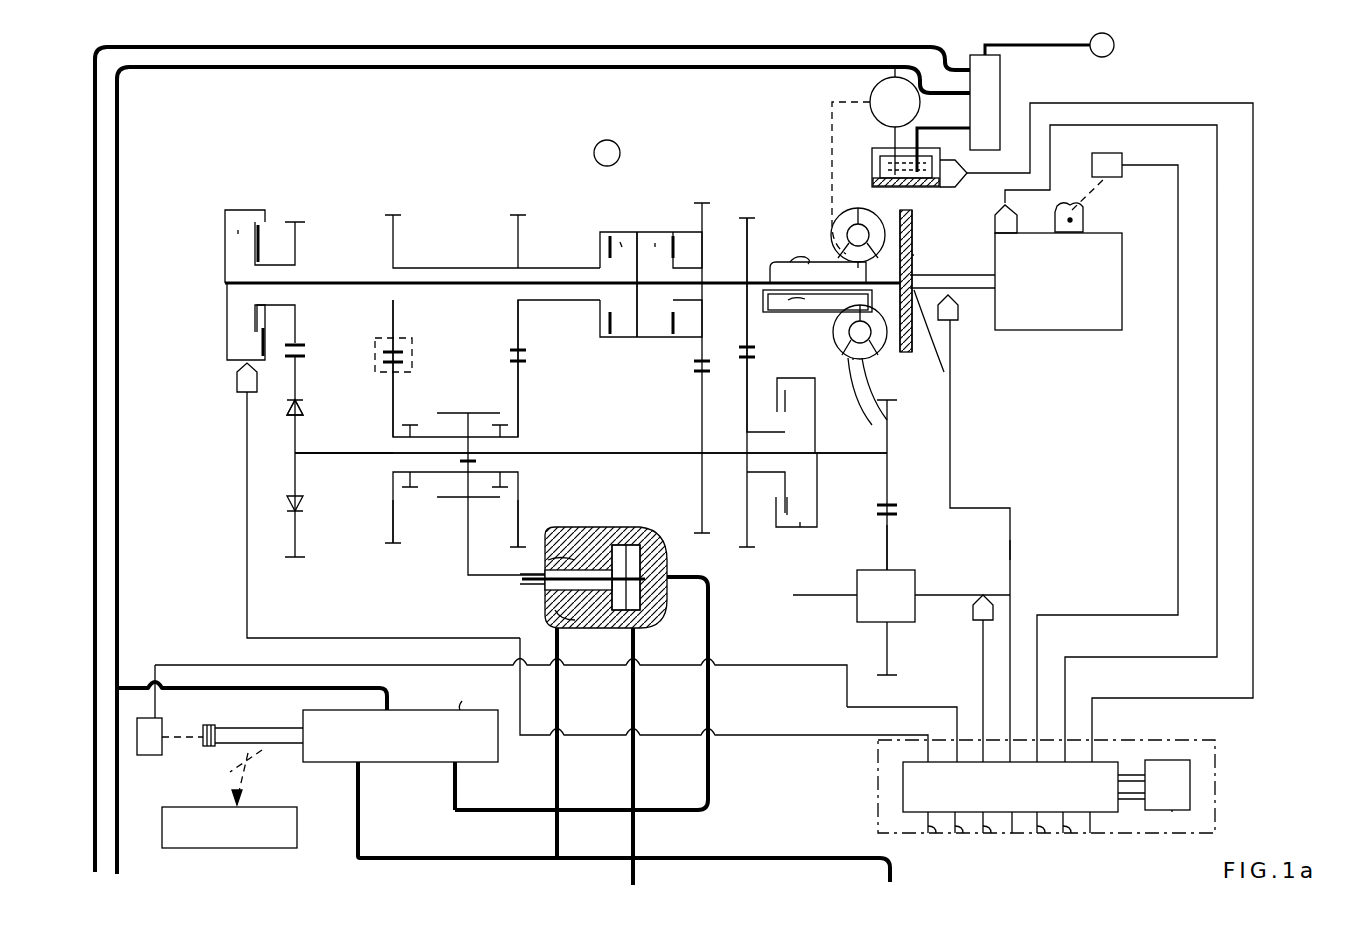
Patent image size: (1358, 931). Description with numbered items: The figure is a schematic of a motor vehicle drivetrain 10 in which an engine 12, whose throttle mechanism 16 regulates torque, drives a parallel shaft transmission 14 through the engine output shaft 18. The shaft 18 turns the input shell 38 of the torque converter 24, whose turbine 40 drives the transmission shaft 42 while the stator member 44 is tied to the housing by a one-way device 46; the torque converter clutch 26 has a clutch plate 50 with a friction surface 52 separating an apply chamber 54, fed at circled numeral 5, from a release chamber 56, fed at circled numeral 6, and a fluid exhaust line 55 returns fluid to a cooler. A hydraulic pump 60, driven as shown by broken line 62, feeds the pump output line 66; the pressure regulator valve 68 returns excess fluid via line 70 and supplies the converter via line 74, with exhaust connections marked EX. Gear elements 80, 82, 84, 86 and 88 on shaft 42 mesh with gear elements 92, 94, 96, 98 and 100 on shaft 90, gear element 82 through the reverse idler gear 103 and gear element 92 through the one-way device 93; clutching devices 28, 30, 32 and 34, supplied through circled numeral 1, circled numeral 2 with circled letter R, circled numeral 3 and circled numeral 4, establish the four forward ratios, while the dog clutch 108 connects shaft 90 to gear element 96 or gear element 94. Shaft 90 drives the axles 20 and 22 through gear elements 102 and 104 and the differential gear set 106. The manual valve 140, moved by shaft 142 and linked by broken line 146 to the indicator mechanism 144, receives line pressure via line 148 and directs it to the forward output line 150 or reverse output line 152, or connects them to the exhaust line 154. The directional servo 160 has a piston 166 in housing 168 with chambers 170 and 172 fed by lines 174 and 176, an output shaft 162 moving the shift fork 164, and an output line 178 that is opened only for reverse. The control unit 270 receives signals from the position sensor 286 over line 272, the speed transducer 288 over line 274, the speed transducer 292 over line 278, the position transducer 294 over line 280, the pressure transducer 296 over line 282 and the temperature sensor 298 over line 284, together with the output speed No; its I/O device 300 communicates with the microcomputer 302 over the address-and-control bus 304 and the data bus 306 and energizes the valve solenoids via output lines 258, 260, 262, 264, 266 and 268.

The motor vehicle drivetrain 10 is at (316, 146).
The parallel shaft transmission 14 is at (198, 310).
The line 74 is at (415, 50).
The pump output line 66 is at (670, 70).
The positive displacement hydraulic pump 60 is at (870, 96).
The broken line 62 is at (828, 118).
The pressure regulator valve 68 is at (1000, 100).
The line 70 is at (967, 130).
The torque converter 24 is at (818, 168).
The temperature sensor 298 is at (963, 185).
The line 284 is at (1253, 420).
The line 282 is at (1215, 330).
The line 280 is at (1178, 470).
The pressure transducer 296 is at (1030, 200).
The position transducer 294 is at (1122, 158).
The throttle mechanism 16 is at (1086, 217).
The engine 12 is at (1072, 322).
The engine output shaft 18 is at (968, 280).
The torque converter clutch 26 is at (914, 240).
The apply chamber 54 is at (912, 305).
The fluid connection to release chamber 6 is at (912, 255).
The one-way device 46 is at (855, 266).
The transmission shaft 42 is at (772, 272).
The stator member 44 is at (845, 312).
The turbine 40 is at (846, 328).
The input shell 38 is at (867, 402).
The fluid connection to apply chamber 5 is at (853, 360).
The release chamber 56 is at (947, 362).
The speed transducer 292 is at (960, 320).
The gear element 102 is at (952, 468).
The line 278 is at (1012, 535).
The drive axle 22 is at (1010, 565).
The friction surface 52 is at (892, 402).
The gear element 104 is at (892, 548).
The differential gear set 106 is at (912, 585).
The drive axle 20 is at (833, 597).
The clutch plate 50 is at (862, 358).
The clutching device 32 is at (818, 500).
The fluid passage 3 is at (800, 525).
The gear element 100 is at (745, 552).
The gear element 88 is at (750, 230).
The fluid exhaust line 55 is at (756, 330).
The exhaust EX is at (765, 312).
The gear element 86 is at (703, 230).
The gear element 98 is at (702, 472).
The clutching device 30 is at (603, 232).
The clutching device 34 is at (672, 232).
The fluid passage 2 is at (607, 140).
The fluid passage R is at (622, 245).
The fluid passage 4 is at (655, 245).
The gear element 82 is at (394, 240).
The gear element 84 is at (508, 232).
The reverse idler gear 103 is at (414, 352).
The transmission shaft 90 is at (556, 452).
The dog clutch 108 is at (452, 487).
The gear element 94 is at (393, 520).
The gear element 96 is at (512, 525).
The shift fork 164 is at (468, 555).
The clutching device 28 is at (224, 240).
The gear element 80 is at (296, 252).
The fluid passage 1 is at (238, 232).
The gear element 92 is at (293, 515).
The one-way device 93 is at (302, 410).
The speed transducer 288 is at (237, 397).
The directional servo 160 is at (541, 600).
The output shaft 162 is at (542, 566).
The piston 166 is at (625, 545).
The chamber 170 is at (583, 530).
The servo housing 168 is at (545, 615).
The chamber 172 is at (650, 568).
The line 176 is at (712, 766).
The line 174 is at (560, 745).
The output line 178 is at (637, 685).
The forward output line 150 is at (360, 830).
The reverse output line 152 is at (476, 808).
The manual valve 140 is at (410, 760).
The shaft 142 is at (262, 738).
The broken line 146 is at (220, 777).
The indicator mechanism 144 is at (297, 820).
The exhaust line 154 is at (430, 697).
The line 148 is at (274, 688).
The position sensor 286 is at (162, 665).
The line 272 is at (847, 680).
The line 274 is at (898, 707).
The input/output device 300 is at (918, 790).
The transmission output speed No is at (966, 612).
The control unit 270 is at (1222, 790).
The microcomputer 302 is at (1178, 760).
The address-and-control bus 304 is at (1130, 776).
The bi-directional data bus 306 is at (1175, 812).
The output line 258 is at (905, 816).
The output line 260 is at (923, 848).
The output line 262 is at (975, 848).
The output line 264 is at (1009, 849).
The output line 266 is at (1059, 848).
The output line 268 is at (1099, 842).